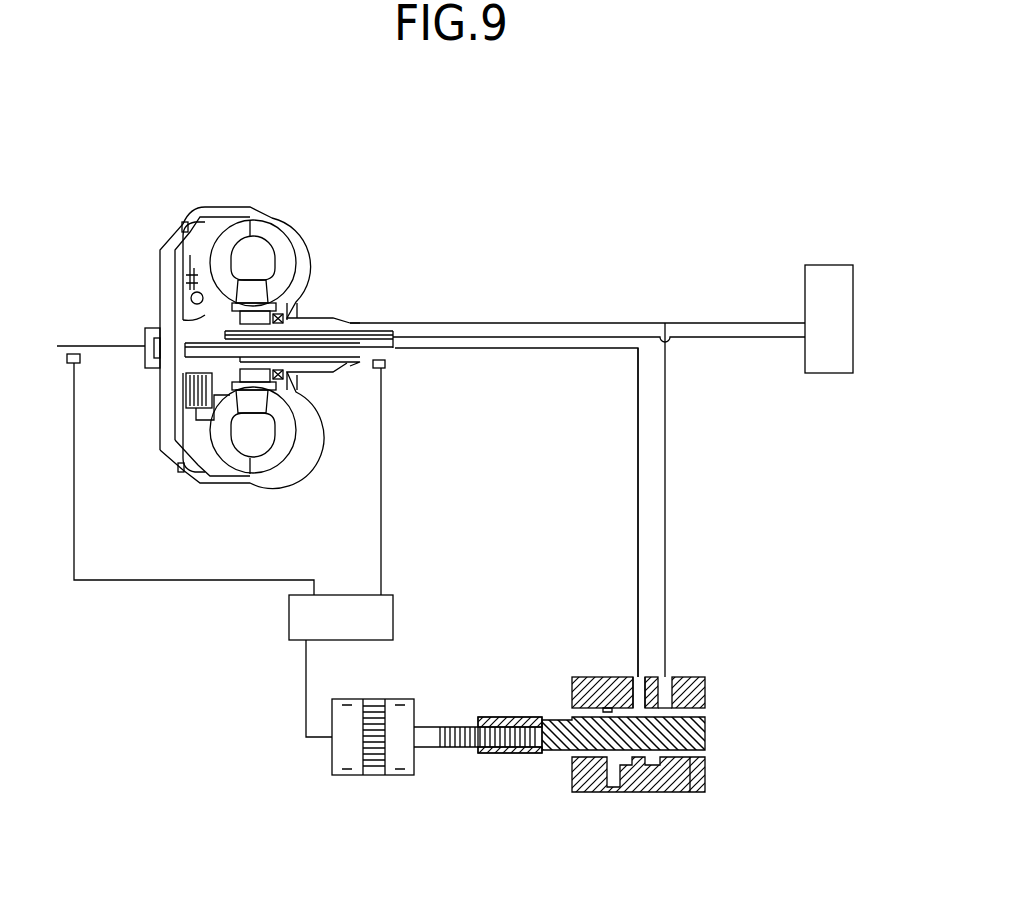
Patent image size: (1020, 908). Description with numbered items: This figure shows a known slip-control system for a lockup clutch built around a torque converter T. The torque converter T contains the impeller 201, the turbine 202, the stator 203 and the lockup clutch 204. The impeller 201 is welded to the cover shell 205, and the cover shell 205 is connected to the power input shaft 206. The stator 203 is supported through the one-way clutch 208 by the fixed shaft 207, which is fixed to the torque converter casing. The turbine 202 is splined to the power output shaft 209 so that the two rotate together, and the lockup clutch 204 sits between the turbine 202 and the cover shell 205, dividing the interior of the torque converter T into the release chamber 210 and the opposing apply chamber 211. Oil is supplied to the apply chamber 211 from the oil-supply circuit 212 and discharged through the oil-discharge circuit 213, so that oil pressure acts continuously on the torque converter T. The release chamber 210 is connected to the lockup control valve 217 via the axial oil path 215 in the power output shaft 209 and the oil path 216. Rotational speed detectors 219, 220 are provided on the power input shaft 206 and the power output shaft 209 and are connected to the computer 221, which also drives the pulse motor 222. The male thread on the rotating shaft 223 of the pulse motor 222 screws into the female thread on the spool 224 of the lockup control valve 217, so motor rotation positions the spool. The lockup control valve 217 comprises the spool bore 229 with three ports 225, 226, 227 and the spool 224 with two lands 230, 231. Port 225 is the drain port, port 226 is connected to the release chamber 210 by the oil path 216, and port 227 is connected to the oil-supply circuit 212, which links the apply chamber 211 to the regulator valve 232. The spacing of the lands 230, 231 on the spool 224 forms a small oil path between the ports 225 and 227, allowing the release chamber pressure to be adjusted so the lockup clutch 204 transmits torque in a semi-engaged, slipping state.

The torque converter T is at (166, 482).
The impeller 201 is at (275, 243).
The turbine 202 is at (234, 236).
The stator 203 is at (256, 290).
The lockup clutch 204 is at (180, 282).
The cover shell 205 is at (167, 413).
The power input shaft 206 is at (87, 343).
The fixed shaft 207 is at (345, 367).
The one-way clutch 208 is at (263, 394).
The power output shaft 209 is at (362, 358).
The release chamber 210 is at (178, 390).
The apply chamber 211 is at (213, 462).
The oil-supply circuit 212 is at (731, 322).
The oil-discharge circuit 213 is at (736, 338).
The axial oil path 215 is at (395, 350).
The oil path 216 is at (638, 510).
The lockup control valve 217 is at (684, 630).
The rotational speed detector 219 is at (57, 365).
The rotational speed detector 220 is at (384, 370).
The computer 221 is at (393, 608).
The pulse motor 222 is at (345, 776).
The rotating shaft 223 is at (465, 762).
The spool 224 is at (562, 752).
The port 225 is at (605, 676).
The port 226 is at (636, 676).
The port 227 is at (690, 676).
The spool bore 229 is at (707, 718).
The land 230 is at (606, 792).
The land 231 is at (680, 792).
The regulator valve 232 is at (853, 318).